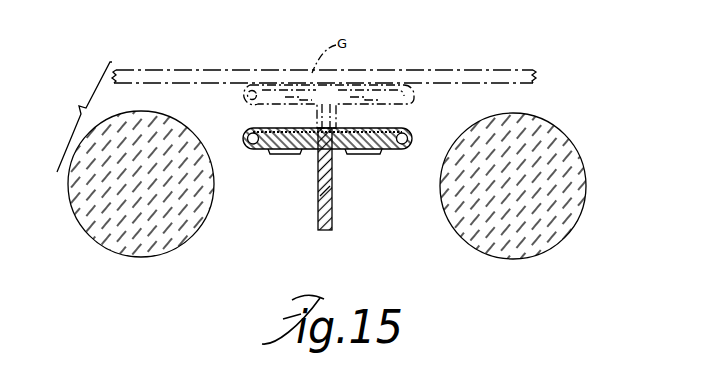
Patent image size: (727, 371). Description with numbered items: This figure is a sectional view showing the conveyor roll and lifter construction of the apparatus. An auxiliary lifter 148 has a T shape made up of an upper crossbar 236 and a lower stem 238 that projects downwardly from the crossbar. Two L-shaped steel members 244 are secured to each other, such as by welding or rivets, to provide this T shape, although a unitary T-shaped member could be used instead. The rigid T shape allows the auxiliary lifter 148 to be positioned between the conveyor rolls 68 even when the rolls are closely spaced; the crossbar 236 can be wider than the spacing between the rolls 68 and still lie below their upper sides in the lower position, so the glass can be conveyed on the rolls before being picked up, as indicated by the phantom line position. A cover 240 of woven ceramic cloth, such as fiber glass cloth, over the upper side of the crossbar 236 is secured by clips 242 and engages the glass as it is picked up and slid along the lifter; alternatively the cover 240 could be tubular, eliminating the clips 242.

The conveyor rolls 68 is at (167, 235).
The auxiliary lifter 148 is at (413, 98).
The upper crossbar 236 is at (300, 130).
The lower stem 238 is at (332, 215).
The cover 240 is at (248, 128).
The clips 242 is at (293, 152).
The L-shaped steel members 244 is at (330, 188).